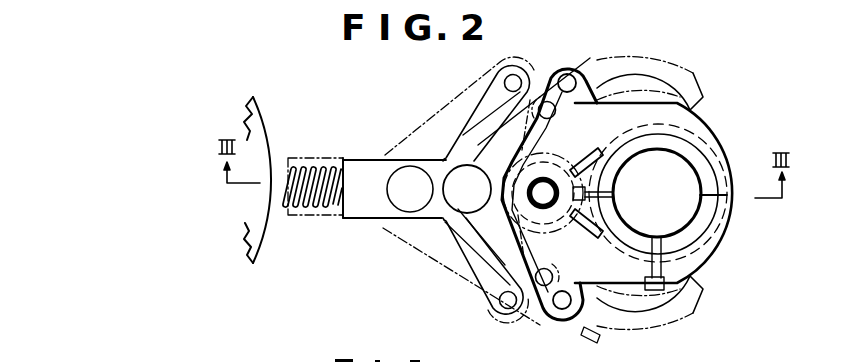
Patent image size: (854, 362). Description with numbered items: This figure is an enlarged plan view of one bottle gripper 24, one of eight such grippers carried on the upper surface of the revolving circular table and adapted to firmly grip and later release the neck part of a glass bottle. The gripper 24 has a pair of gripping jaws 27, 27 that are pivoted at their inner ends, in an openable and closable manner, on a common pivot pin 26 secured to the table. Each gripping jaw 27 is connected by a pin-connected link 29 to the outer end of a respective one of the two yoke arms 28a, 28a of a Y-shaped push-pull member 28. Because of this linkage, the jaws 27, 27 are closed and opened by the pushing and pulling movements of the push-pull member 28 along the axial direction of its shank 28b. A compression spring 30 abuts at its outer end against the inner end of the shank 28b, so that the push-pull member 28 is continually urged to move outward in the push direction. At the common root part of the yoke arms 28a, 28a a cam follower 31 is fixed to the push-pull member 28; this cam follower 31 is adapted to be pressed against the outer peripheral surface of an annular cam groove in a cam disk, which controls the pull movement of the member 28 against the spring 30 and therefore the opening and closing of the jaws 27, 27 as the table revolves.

The bottle gripper 24 is at (428, 122).
The pivot pin 26 is at (530, 208).
The gripping jaw 27 is at (712, 147).
The push-pull member 28 is at (430, 243).
The yoke arm 28a is at (481, 142).
The shank 28b is at (352, 218).
The pin-connected link 29 is at (598, 92).
The compression spring 30 is at (297, 216).
The cam follower 31 is at (463, 220).